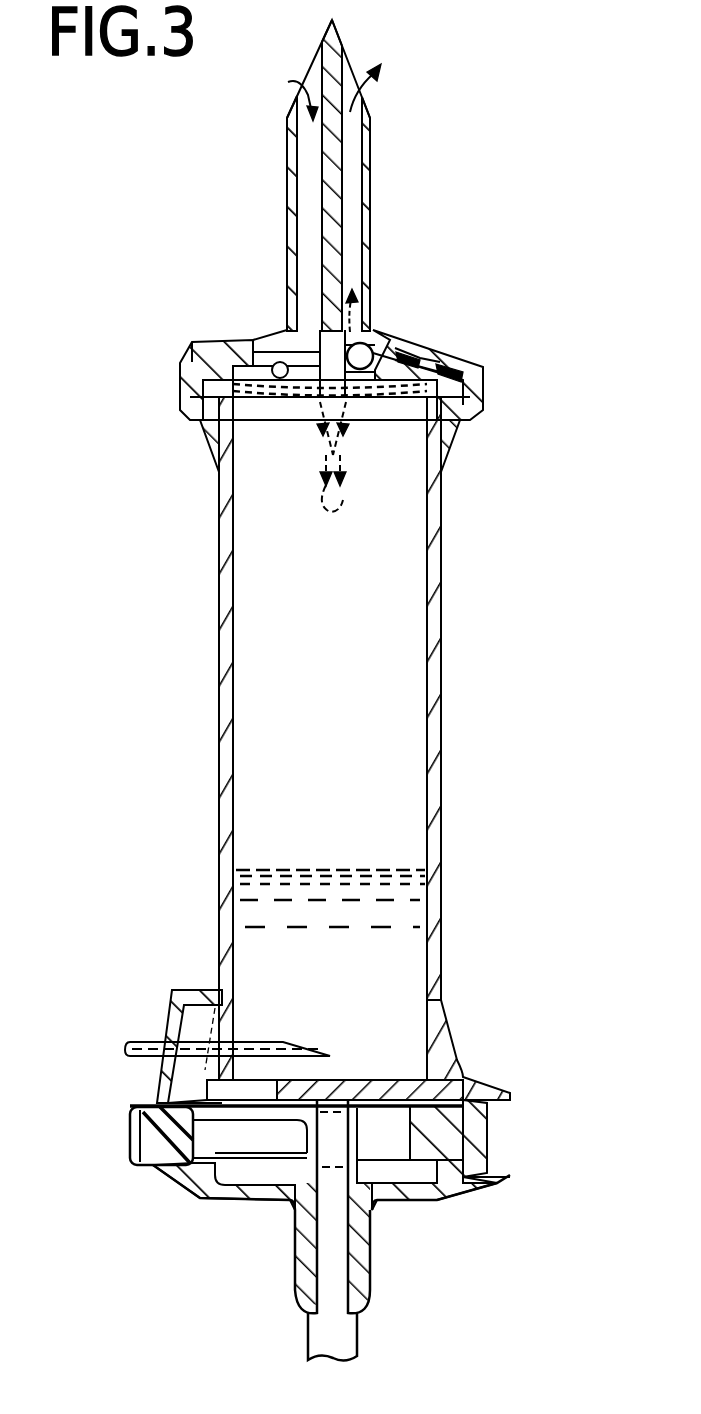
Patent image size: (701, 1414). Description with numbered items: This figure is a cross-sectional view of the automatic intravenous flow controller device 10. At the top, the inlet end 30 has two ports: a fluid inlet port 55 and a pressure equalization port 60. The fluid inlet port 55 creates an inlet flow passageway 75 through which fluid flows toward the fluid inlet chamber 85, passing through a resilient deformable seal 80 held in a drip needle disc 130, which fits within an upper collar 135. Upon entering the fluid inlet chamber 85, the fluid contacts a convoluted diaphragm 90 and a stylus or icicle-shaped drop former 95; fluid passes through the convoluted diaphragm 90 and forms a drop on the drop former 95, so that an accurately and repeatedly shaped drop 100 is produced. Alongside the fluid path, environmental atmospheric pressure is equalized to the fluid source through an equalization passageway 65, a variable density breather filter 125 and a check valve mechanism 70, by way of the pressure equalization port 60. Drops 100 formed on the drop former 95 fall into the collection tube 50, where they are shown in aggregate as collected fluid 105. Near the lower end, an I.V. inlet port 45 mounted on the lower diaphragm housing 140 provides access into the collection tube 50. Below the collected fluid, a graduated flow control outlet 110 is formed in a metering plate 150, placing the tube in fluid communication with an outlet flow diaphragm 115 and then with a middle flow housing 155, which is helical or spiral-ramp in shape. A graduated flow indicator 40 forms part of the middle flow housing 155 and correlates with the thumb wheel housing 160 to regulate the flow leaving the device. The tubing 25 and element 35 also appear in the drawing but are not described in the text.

The flow controller device 10 is at (185, 186).
The tubing 25 is at (337, 1340).
The inlet end 30 is at (340, 40).
The upper hub cap 35 is at (190, 337).
The graduated flow indicator 40 is at (130, 1114).
The I.V. inlet port 45 is at (122, 1041).
The collection tube 50 is at (307, 718).
The fluid inlet port 55 is at (298, 96).
The pressure equalization port 60 is at (362, 104).
The equalization passageway 65 is at (355, 300).
The check valve mechanism 70 is at (364, 347).
The inlet flow passageway 75 is at (309, 248).
The resilient deformable seal 80 is at (225, 348).
The fluid inlet chamber 85 is at (393, 335).
The convoluted diaphragm 90 is at (212, 430).
The drop former 95 is at (308, 408).
The drop 100 is at (340, 500).
The collected fluid 105 is at (354, 969).
The graduated flow control outlet 110 is at (230, 1088).
The outlet flow diaphragm 115 is at (245, 1130).
The variable density breather filter 125 is at (430, 350).
The drip needle disc 130 is at (232, 372).
The upper collar 135 is at (447, 427).
The lower diaphragm housing 140 is at (190, 993).
The metering plate 150 is at (370, 1078).
The middle flow housing 155 is at (498, 1183).
The thumb wheel housing 160 is at (358, 1222).